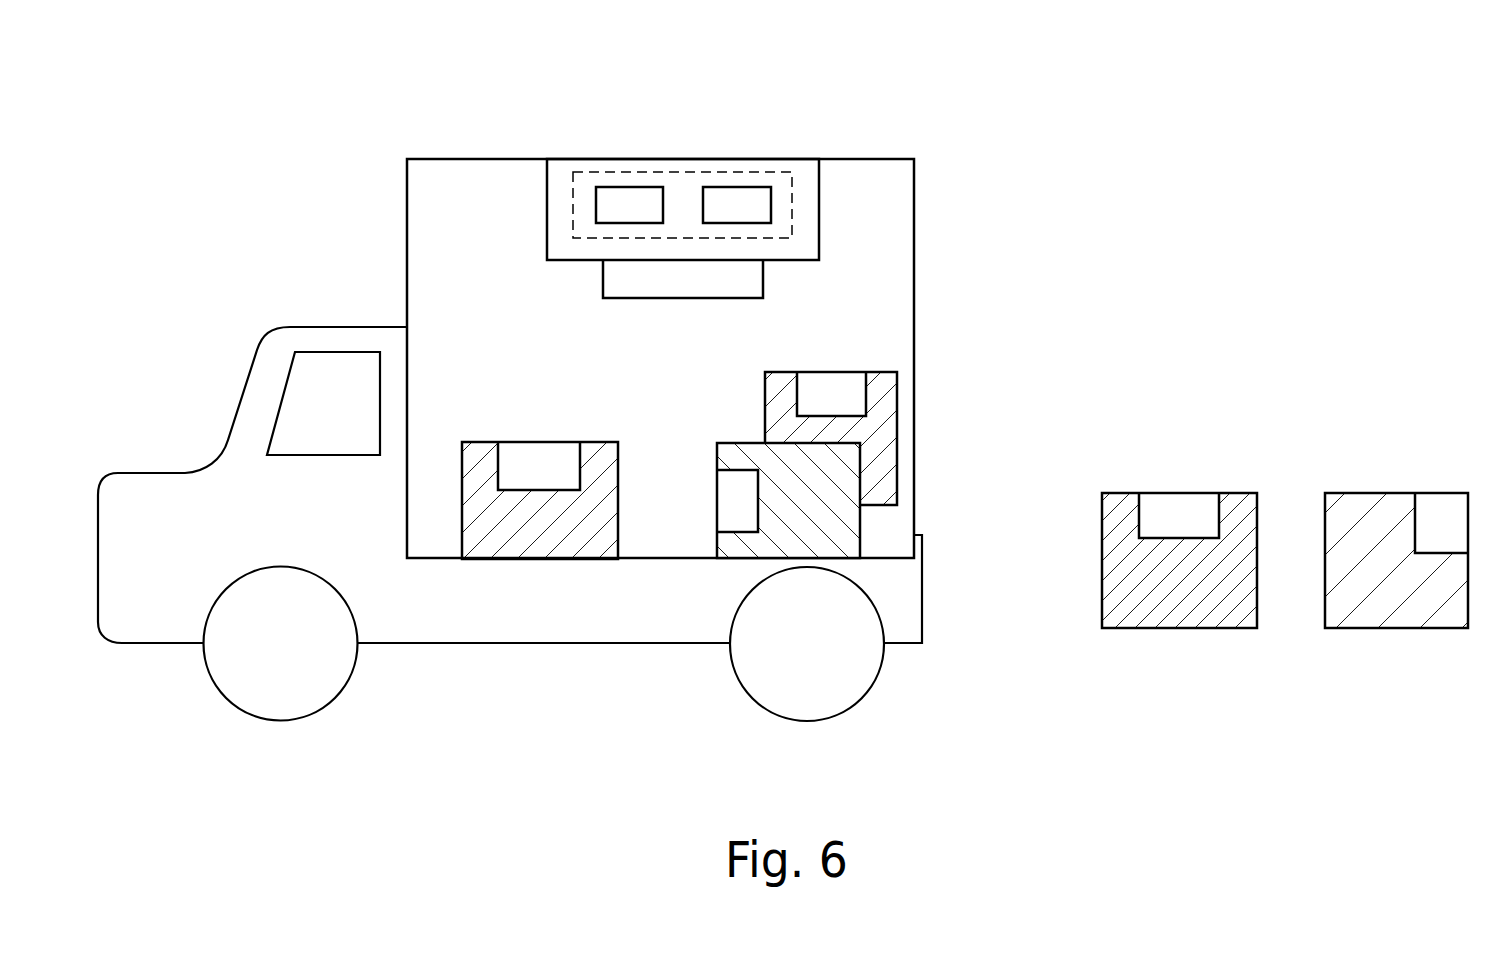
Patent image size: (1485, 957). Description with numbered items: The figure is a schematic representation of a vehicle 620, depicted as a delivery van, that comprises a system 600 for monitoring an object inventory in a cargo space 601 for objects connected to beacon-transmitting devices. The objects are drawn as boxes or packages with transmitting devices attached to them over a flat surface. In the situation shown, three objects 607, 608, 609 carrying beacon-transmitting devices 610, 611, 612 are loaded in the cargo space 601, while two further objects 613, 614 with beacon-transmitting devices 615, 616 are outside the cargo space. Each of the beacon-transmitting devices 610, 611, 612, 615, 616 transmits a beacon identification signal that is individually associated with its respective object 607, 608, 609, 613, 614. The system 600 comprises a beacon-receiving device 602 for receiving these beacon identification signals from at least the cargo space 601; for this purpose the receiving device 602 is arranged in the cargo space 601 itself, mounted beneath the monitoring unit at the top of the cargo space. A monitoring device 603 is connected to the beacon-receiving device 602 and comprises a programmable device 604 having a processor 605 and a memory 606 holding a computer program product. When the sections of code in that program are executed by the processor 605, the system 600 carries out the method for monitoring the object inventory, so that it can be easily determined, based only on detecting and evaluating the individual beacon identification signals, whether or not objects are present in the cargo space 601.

The system 600 is at (1040, 113).
The cargo space 601 is at (890, 212).
The beacon-receiving device 602 is at (758, 280).
The monitoring device 603 is at (822, 208).
The programmable device 604 is at (675, 173).
The processor 605 is at (615, 212).
The memory 606 is at (758, 212).
The object 607 is at (528, 548).
The object 608 is at (863, 518).
The object 609 is at (885, 402).
The beacon-transmitting device 610 is at (527, 463).
The beacon-transmitting device 611 is at (725, 502).
The beacon-transmitting device 612 is at (843, 378).
The object 613 is at (1190, 628).
The object 614 is at (1398, 628).
The beacon-transmitting device 615 is at (1180, 517).
The beacon-transmitting device 616 is at (1433, 517).
The vehicle 620 is at (343, 327).